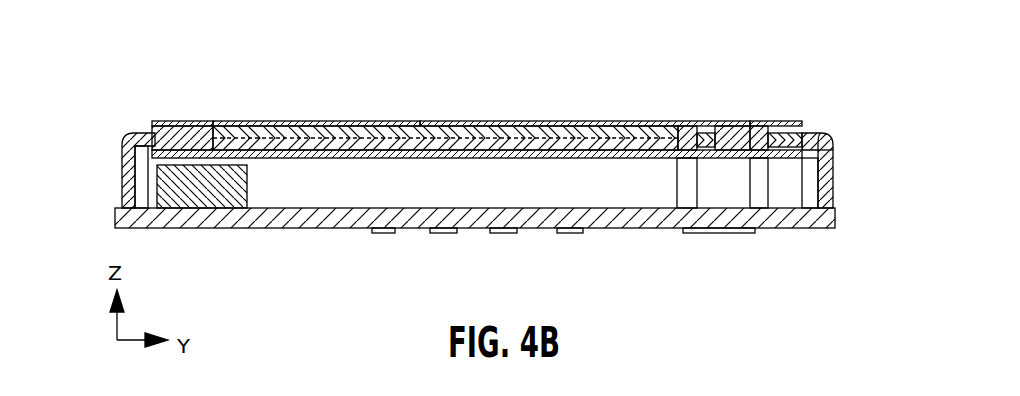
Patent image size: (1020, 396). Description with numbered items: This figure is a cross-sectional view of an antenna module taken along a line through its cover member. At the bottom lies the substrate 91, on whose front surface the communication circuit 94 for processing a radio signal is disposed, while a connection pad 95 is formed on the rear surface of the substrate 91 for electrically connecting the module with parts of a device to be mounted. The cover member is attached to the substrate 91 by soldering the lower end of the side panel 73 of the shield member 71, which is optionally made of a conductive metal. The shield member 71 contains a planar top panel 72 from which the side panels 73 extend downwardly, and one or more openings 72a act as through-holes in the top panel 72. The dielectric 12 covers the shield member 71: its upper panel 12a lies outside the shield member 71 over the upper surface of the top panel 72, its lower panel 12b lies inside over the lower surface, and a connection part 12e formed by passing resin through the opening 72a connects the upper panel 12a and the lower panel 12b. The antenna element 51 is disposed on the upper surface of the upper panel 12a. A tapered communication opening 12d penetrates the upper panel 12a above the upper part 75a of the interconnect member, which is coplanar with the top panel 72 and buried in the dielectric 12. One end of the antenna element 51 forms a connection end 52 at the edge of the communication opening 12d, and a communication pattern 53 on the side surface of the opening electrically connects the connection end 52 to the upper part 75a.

The dielectric 12 is at (777, 121).
The upper panel 12a is at (523, 126).
The lower panel 12b is at (567, 158).
The communication opening 12d is at (723, 126).
The connection part 12e is at (200, 121).
The antenna element 51 is at (363, 121).
The connection end 52 is at (700, 126).
The communication pattern 53 is at (715, 123).
The shield member 71 is at (815, 130).
The top panel 72 is at (410, 138).
The opening 72a is at (212, 121).
The side panel 73 is at (835, 170).
The upper part 75a is at (716, 126).
The substrate 91 is at (792, 230).
The communication circuit 94 is at (300, 192).
The connection pad 95 is at (377, 233).